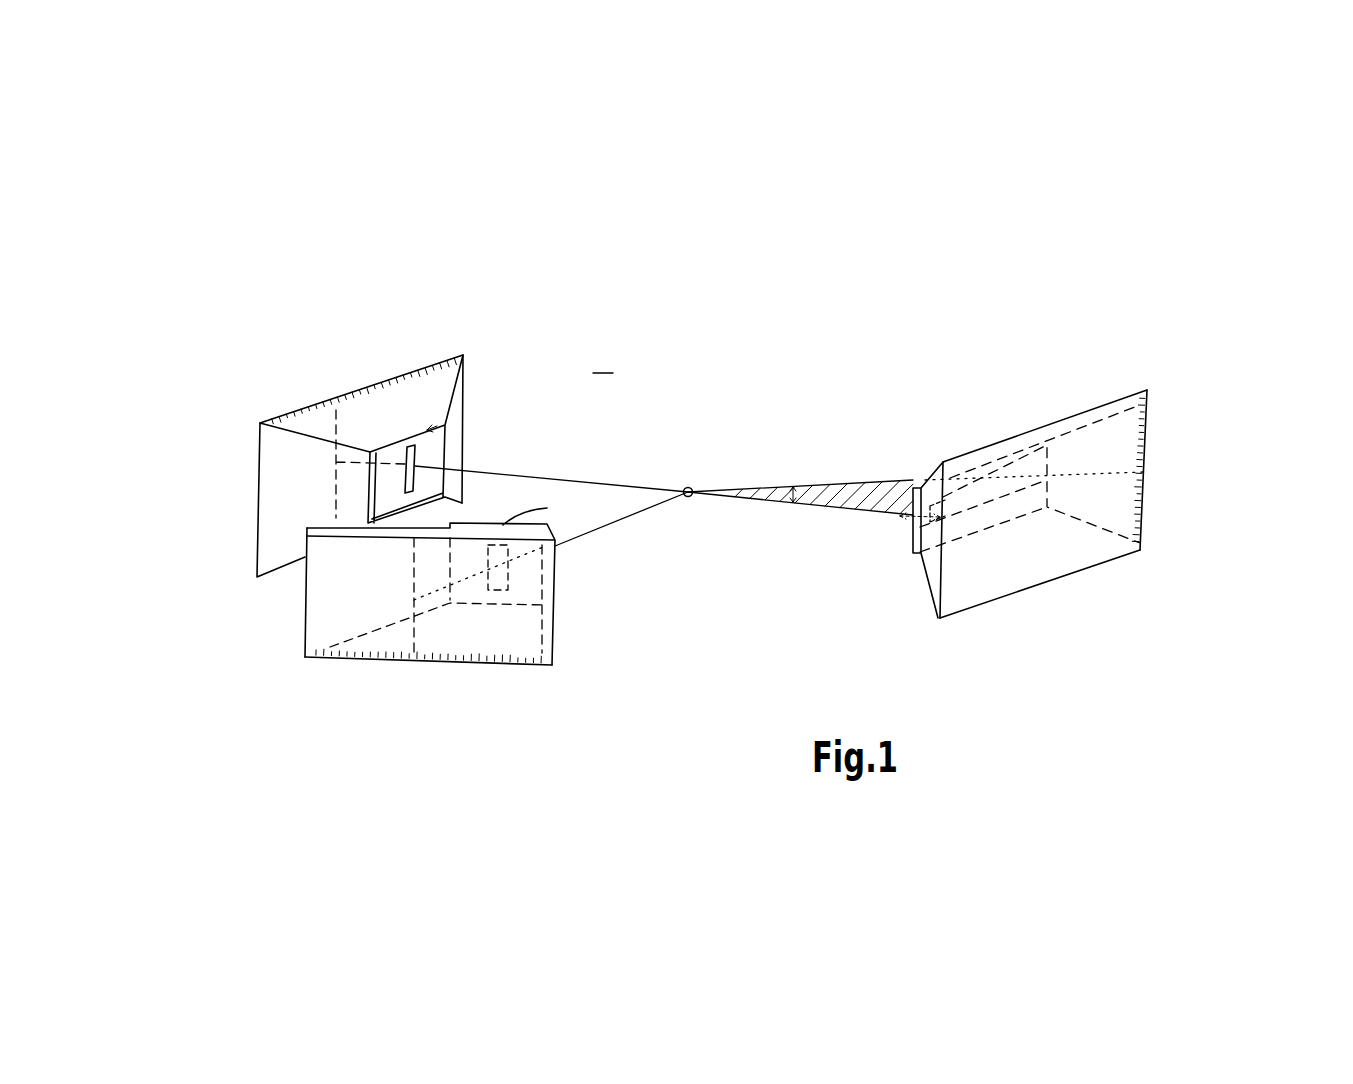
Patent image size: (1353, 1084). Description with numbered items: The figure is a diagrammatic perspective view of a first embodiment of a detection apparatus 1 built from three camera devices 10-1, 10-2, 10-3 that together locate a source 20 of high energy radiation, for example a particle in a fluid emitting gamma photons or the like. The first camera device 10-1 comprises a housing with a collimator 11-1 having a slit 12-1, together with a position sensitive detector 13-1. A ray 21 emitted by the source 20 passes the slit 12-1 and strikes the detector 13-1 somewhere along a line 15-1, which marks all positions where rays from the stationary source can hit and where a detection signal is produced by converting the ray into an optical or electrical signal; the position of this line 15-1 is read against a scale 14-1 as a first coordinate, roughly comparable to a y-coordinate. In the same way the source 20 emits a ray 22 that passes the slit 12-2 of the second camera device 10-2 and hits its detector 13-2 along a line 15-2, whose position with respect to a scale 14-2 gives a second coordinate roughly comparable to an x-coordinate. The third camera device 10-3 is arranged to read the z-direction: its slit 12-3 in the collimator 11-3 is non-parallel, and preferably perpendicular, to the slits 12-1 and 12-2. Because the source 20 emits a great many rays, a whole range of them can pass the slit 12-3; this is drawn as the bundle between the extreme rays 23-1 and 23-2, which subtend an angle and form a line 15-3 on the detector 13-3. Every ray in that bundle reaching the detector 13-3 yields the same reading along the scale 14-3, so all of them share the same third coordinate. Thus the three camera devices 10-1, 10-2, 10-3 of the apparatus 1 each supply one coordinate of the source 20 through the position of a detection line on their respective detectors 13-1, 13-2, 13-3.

The detection apparatus 1 is at (972, 257).
The camera device 10-1 is at (240, 366).
The camera device 10-2 is at (574, 651).
The camera device 10-3 is at (1177, 407).
The collimator 11-1 is at (445, 422).
The collimator 11-3 is at (912, 542).
The slit 12-1 is at (417, 467).
The slit 12-2 is at (503, 582).
The slit 12-3 is at (992, 497).
The position sensitive detector 13-1 is at (270, 464).
The detector 13-2 is at (305, 585).
The detector 13-3 is at (1027, 587).
The scale 14-1 is at (408, 372).
The scale 14-2 is at (463, 663).
The scale 14-3 is at (1142, 507).
The line 15-1 is at (333, 488).
The line 15-2 is at (413, 572).
The line 15-3 is at (1060, 495).
The source 20 is at (690, 488).
The ray 21 is at (578, 480).
The ray 22 is at (622, 520).
The extreme ray 23-1 is at (842, 480).
The extreme ray 23-2 is at (842, 508).